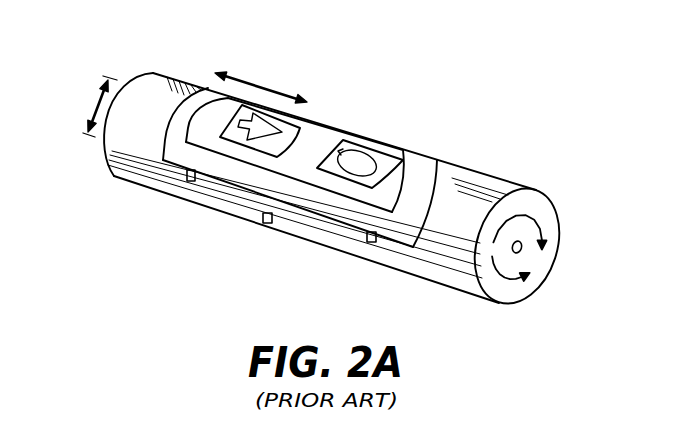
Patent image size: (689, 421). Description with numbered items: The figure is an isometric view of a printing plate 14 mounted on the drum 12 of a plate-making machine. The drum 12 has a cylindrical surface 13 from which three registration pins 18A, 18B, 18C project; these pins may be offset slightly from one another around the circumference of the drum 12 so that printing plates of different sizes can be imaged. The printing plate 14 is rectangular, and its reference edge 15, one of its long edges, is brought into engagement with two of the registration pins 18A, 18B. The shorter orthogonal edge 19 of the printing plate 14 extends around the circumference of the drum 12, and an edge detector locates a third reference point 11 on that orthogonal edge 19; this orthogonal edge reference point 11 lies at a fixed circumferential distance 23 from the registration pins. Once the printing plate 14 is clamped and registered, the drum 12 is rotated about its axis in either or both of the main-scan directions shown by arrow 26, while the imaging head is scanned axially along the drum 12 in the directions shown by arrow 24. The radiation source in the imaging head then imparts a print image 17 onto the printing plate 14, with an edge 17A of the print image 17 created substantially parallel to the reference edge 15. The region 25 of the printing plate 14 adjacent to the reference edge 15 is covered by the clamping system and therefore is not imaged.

The orthogonal edge reference point 11 is at (172, 112).
The drum 12 is at (561, 245).
The cylindrical surface 13 is at (482, 190).
The printing plate 14 is at (447, 172).
The reference edge 15 is at (313, 213).
The print image 17 is at (323, 133).
The edge of print image 17A is at (233, 163).
The registration pin 18A is at (187, 182).
The registration pin 18B is at (371, 244).
The registration pin 18C is at (266, 224).
The orthogonal edge 19 is at (186, 90).
The fixed circumferential distance 23 is at (88, 110).
The arrow 24 is at (258, 83).
The region 25 is at (360, 193).
The arrow 26 is at (528, 215).